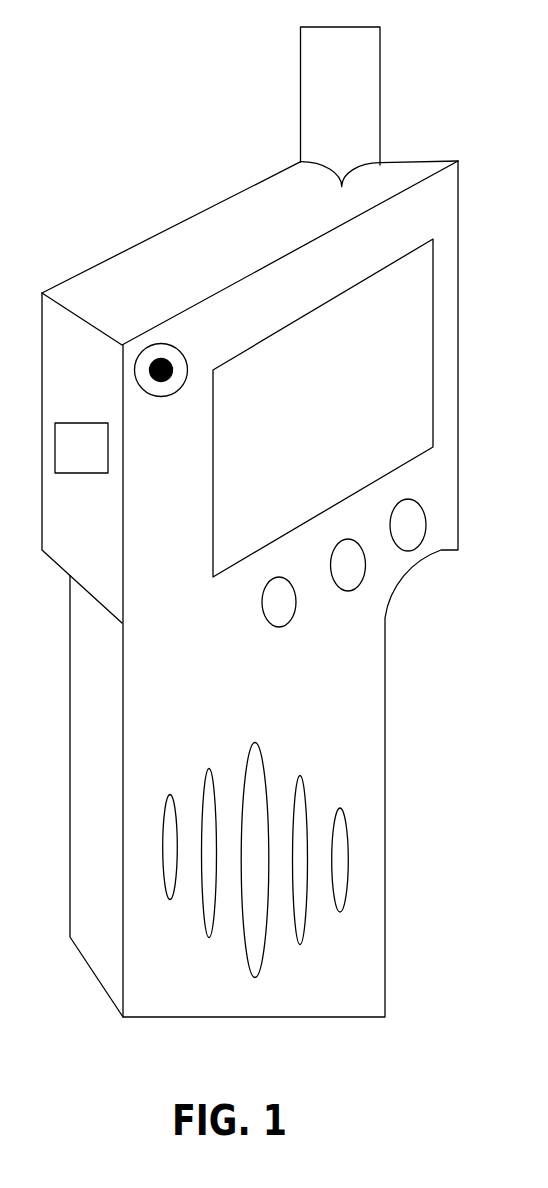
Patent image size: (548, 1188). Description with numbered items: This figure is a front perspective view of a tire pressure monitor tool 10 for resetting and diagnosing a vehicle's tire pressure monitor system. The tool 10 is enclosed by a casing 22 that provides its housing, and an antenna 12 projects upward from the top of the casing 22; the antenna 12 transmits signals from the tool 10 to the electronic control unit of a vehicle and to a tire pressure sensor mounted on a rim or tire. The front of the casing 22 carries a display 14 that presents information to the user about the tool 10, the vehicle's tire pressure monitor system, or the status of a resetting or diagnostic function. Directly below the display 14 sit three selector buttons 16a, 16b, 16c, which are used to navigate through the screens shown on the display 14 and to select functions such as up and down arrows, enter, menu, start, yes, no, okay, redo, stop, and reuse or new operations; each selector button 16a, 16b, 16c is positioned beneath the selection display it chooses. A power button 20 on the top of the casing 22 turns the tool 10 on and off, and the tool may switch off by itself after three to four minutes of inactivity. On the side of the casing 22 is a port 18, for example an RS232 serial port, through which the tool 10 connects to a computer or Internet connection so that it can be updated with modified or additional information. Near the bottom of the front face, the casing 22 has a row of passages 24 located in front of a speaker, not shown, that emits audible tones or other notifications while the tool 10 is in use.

The tire pressure monitor tool 10 is at (131, 92).
The antenna 12 is at (300, 54).
The display 14 is at (331, 299).
The selector button 16a is at (297, 617).
The selector button 16b is at (362, 582).
The selector button 16c is at (417, 547).
The port 18 is at (107, 422).
The power button 20 is at (160, 344).
The casing 22 is at (353, 783).
The passages 24 is at (307, 873).